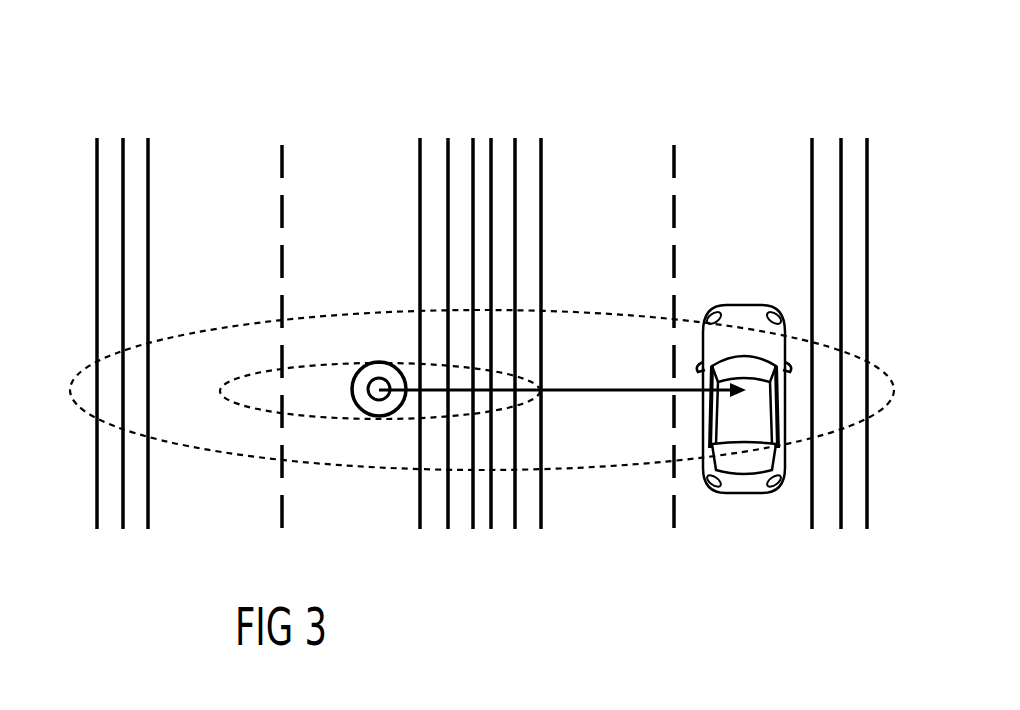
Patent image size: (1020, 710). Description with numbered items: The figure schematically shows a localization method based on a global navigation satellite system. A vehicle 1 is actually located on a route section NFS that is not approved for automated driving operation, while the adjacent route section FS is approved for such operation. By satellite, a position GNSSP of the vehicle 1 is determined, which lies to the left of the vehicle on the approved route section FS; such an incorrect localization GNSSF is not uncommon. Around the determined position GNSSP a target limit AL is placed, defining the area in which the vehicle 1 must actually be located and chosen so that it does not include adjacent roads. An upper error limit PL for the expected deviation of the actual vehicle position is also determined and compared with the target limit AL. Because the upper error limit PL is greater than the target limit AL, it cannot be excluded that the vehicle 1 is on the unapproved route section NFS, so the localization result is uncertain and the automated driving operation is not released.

The vehicle 1 is at (738, 432).
The upper error limit PL is at (88, 363).
The target limit AL is at (258, 365).
The position of the vehicle GNSSP is at (378, 362).
The incorrect localization GNSSF is at (631, 388).
The route section approved for automated driving operation FS is at (317, 148).
The route section not approved for automated driving operation NFS is at (703, 148).